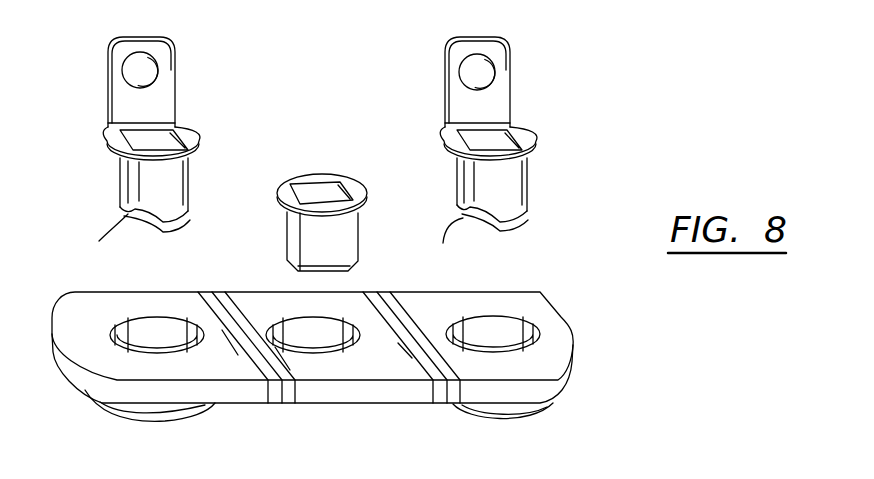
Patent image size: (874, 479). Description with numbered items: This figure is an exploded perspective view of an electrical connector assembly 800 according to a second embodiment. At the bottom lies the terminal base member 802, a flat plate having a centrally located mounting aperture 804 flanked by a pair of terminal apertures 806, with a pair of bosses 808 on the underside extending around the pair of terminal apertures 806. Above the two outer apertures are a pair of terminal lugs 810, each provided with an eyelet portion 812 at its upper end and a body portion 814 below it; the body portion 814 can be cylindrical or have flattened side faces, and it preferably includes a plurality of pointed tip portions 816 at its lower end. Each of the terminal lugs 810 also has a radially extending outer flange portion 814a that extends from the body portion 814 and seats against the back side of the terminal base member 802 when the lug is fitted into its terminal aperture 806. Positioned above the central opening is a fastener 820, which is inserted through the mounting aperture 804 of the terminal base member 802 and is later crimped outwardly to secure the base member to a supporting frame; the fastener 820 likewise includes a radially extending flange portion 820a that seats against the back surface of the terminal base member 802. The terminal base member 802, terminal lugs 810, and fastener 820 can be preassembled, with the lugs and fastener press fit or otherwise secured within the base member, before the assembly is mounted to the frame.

The electrical connector assembly 800 is at (296, 72).
The terminal base member 802 is at (265, 308).
The mounting aperture 804 is at (313, 333).
The terminal apertures 806 is at (150, 330).
The bosses 808 is at (170, 413).
The terminal lugs 810 is at (137, 137).
The eyelet portion 812 is at (117, 70).
The body portion 814 is at (167, 188).
The outer flange portion 814a is at (113, 152).
The pointed tip portions 816 is at (166, 225).
The fastener 820 is at (303, 167).
The flange portion 820a is at (355, 188).